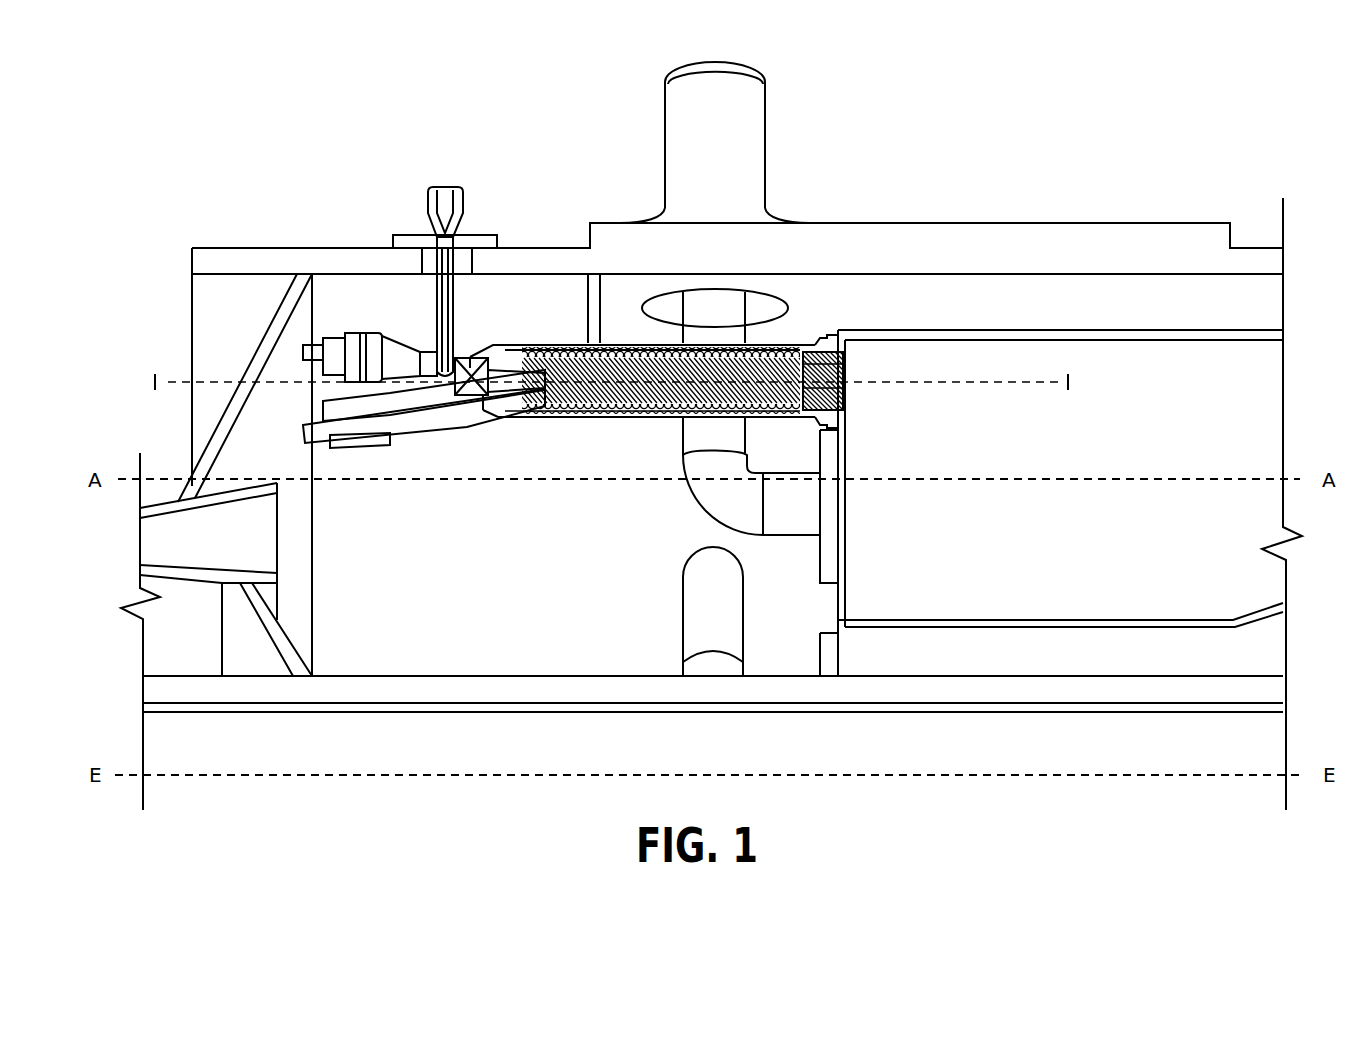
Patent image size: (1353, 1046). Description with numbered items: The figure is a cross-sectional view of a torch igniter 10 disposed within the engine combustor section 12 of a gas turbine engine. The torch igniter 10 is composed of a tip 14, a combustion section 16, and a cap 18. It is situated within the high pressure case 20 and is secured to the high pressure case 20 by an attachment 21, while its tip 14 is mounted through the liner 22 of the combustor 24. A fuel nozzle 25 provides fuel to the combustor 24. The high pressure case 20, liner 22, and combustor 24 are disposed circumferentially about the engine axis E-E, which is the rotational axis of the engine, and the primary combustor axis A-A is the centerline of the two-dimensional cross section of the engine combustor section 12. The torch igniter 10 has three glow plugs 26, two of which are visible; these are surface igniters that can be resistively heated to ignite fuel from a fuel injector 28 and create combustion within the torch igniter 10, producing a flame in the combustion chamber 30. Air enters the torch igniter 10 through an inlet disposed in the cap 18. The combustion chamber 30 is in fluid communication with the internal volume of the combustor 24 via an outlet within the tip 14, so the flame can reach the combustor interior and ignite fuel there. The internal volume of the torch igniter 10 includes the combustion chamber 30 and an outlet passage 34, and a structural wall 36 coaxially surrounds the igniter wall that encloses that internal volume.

The torch igniter 10 is at (634, 280).
The engine combustor section 12 is at (314, 524).
The tip 14 is at (799, 460).
The combustion section 16 is at (566, 452).
The cap 18 is at (439, 462).
The high pressure case 20 is at (946, 226).
The attachment 21 is at (575, 287).
The liner 22 is at (1047, 330).
The combustor 24 is at (1100, 440).
The fuel nozzle 25 is at (706, 494).
The glow plugs 26 is at (303, 438).
The fuel injector 28 is at (430, 340).
The combustion chamber 30 is at (567, 346).
The outlet passage 34 is at (858, 377).
The structural wall 36 is at (647, 416).